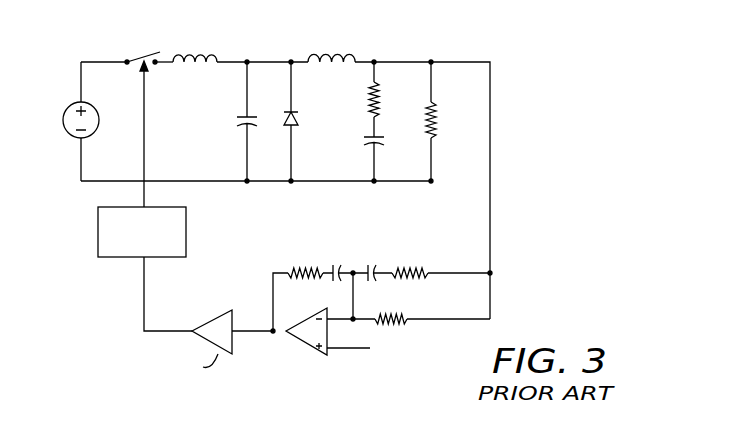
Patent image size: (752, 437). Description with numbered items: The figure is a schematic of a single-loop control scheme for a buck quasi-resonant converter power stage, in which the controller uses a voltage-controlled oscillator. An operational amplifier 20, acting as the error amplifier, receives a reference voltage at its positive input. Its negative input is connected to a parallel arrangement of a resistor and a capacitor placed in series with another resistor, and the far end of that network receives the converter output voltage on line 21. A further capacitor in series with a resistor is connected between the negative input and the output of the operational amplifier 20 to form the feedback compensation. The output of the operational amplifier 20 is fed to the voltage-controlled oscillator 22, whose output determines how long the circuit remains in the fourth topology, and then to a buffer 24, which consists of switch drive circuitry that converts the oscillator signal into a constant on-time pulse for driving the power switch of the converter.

The operational amplifier 20 is at (314, 350).
The line 21 is at (490, 185).
The voltage-controlled oscillator 22 is at (226, 312).
The buffer 24 is at (204, 215).